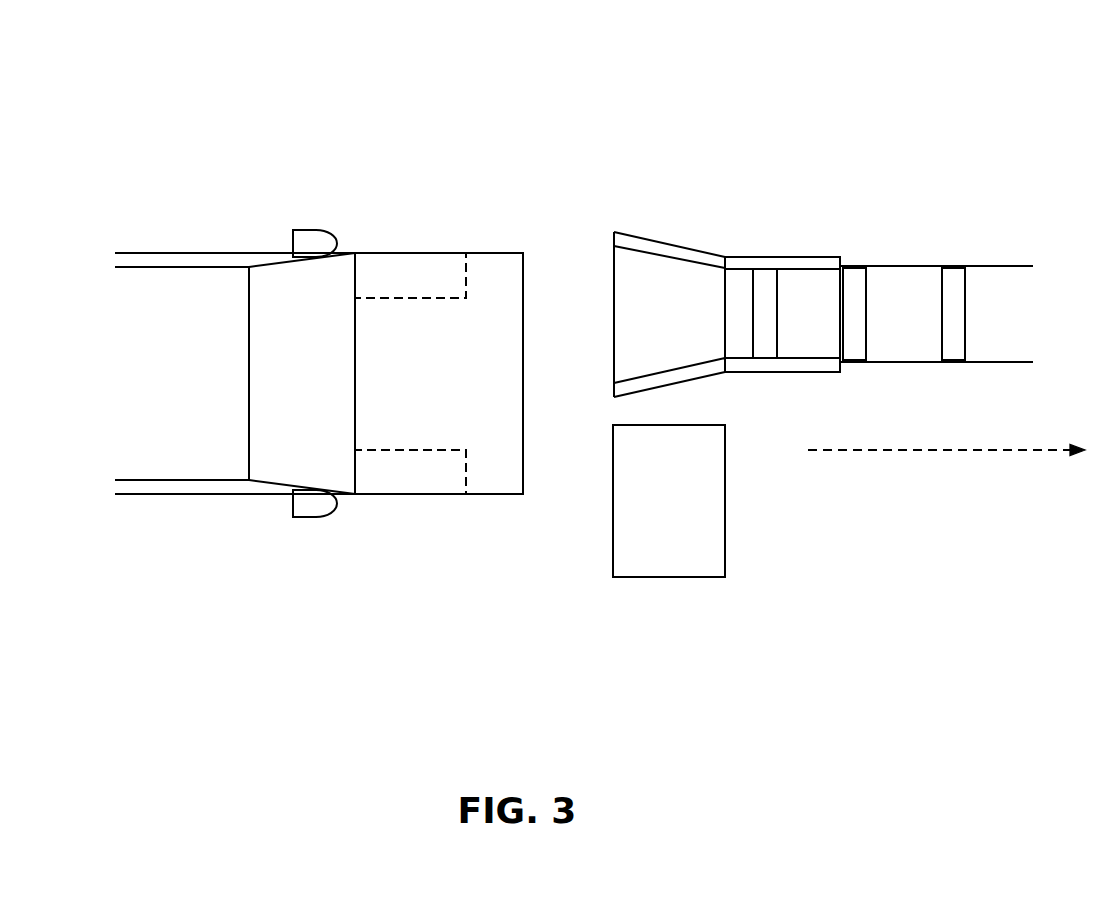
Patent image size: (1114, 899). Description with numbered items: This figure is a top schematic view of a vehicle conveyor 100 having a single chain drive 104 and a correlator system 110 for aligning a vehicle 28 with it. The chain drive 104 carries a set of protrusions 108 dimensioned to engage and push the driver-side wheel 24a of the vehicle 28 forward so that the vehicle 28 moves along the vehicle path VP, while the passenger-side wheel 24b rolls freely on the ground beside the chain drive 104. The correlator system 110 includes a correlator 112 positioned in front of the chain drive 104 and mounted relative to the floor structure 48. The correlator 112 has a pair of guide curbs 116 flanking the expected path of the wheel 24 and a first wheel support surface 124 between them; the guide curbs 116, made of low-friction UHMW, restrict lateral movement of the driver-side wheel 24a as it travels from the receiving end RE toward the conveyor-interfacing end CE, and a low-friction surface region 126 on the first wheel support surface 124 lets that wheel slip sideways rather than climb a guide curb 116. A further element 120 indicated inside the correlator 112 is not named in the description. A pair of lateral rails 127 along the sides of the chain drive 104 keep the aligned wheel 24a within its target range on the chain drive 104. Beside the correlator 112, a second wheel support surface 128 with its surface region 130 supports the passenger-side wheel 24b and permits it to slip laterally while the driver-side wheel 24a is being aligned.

The vehicle 28 is at (178, 252).
The wheel 24 is at (401, 376).
The driver-side wheel 24a is at (398, 272).
The passenger-side wheel 24b is at (405, 483).
The vehicle conveyor 100 is at (897, 185).
The chain drive 104 is at (900, 287).
The protrusion 108 is at (868, 343).
The correlator system 110 is at (648, 137).
The floor structure 48 is at (695, 148).
The correlator 112 is at (607, 206).
The guide curb 116 is at (697, 252).
The funnel interior 120 is at (655, 363).
The first wheel support surface 124 is at (618, 325).
The surface region 126 is at (667, 285).
The lateral rail 127 is at (810, 263).
The second wheel support surface 128 is at (683, 573).
The surface region 130 is at (660, 543).
The receiving end RE is at (611, 270).
The conveyor-interfacing end CE is at (730, 308).
The vehicle path VP is at (1013, 452).